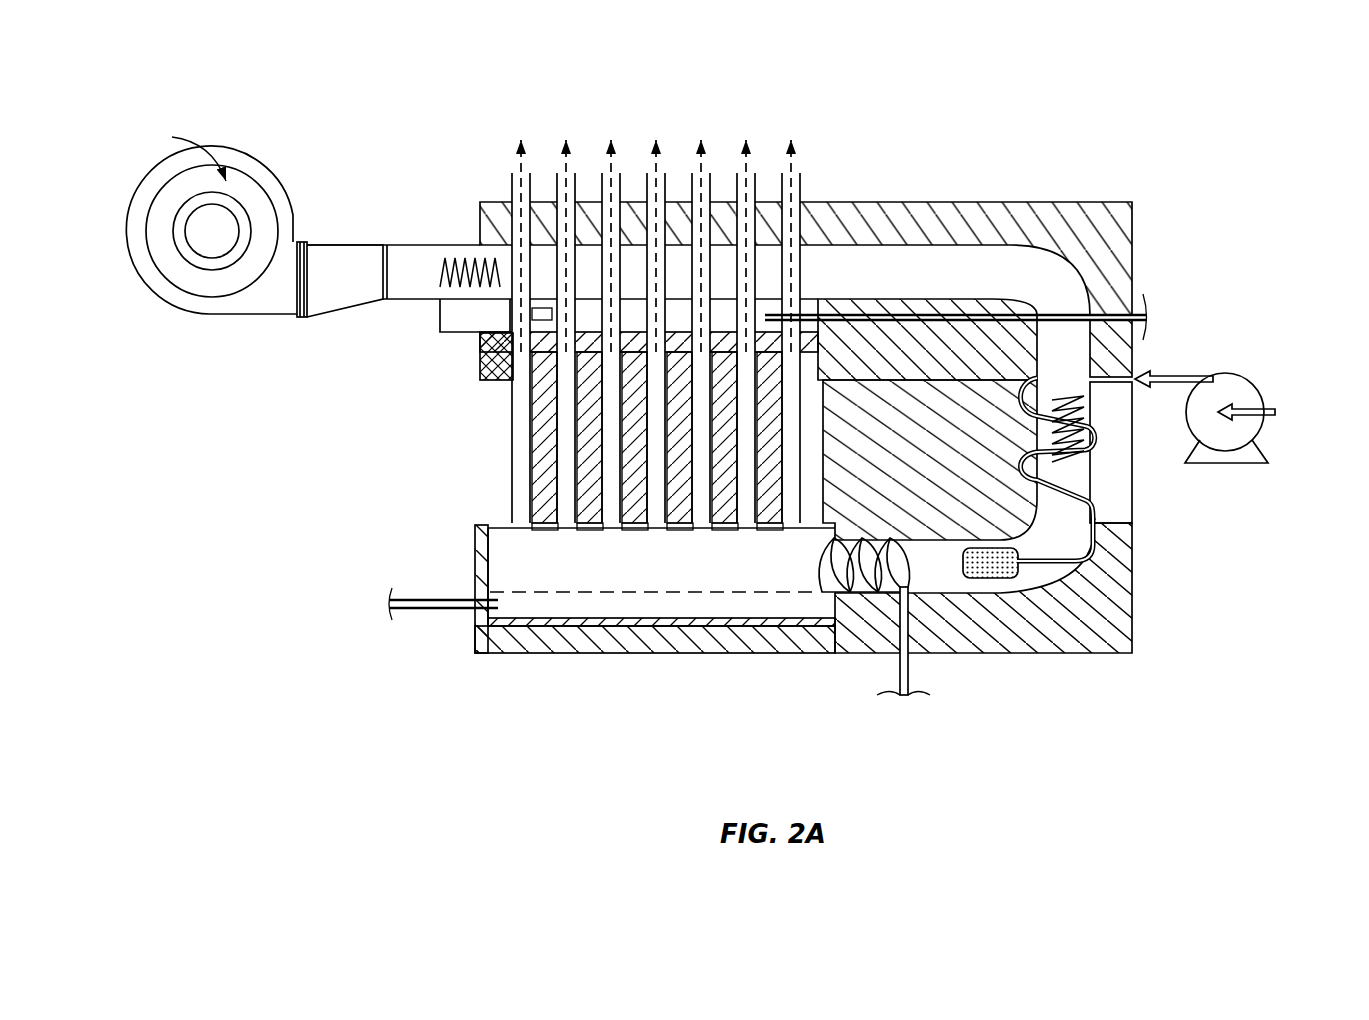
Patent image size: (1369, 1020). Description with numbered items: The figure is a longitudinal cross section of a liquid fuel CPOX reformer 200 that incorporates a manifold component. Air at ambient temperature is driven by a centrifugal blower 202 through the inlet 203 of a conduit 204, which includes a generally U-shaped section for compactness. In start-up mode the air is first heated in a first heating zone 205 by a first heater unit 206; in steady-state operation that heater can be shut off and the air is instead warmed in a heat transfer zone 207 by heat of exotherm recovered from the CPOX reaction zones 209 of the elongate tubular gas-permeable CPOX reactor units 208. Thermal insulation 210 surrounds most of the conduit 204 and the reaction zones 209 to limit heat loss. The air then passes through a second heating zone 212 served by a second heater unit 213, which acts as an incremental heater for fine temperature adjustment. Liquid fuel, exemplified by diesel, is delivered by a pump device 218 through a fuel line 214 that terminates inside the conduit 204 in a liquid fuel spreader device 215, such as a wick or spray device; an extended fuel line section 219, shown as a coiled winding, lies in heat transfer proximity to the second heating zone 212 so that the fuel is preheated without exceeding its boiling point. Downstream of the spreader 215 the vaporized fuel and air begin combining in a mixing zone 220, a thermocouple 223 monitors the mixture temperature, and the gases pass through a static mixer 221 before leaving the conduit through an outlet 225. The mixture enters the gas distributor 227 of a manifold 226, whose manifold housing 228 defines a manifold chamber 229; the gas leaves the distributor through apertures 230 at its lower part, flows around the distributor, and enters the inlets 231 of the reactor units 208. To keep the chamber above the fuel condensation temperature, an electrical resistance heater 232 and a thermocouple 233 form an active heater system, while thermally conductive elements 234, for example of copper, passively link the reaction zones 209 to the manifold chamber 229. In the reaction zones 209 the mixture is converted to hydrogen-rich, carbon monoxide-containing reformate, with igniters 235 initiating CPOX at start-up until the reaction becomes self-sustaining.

The liquid fuel CPOX reformer 200 is at (968, 85).
The centrifugal blower 202 is at (215, 318).
The inlet 203 is at (378, 276).
The conduit 204 is at (395, 302).
The first heating zone 205 is at (462, 255).
The first heater unit 206 is at (480, 262).
The heat transfer zone 207 is at (587, 270).
The CPOX reactor units 208 is at (557, 422).
The CPOX reaction zones 209 is at (651, 256).
The thermal insulation 210 is at (940, 208).
The second heating zone 212 is at (1096, 414).
The second heater unit 213 is at (1093, 478).
The fuel line 214 is at (1138, 371).
The liquid fuel spreader device 215 is at (1018, 583).
The pump device 218 is at (1258, 385).
The extended fuel line section 219 is at (1096, 484).
The mixing zone 220 is at (960, 586).
The static mixer 221 is at (866, 598).
The thermocouple 223 is at (908, 680).
The outlet 225 is at (825, 583).
The manifold 226 is at (640, 622).
The gas distributor 227 is at (607, 580).
The manifold housing 228 is at (652, 630).
The manifold chamber 229 is at (532, 610).
The apertures 230 is at (712, 600).
The inlets 231 is at (567, 506).
The electrical resistance heater 232 is at (488, 625).
The thermocouple 233 is at (442, 598).
The thermally conductive elements 234 is at (480, 373).
The igniters 235 is at (457, 333).